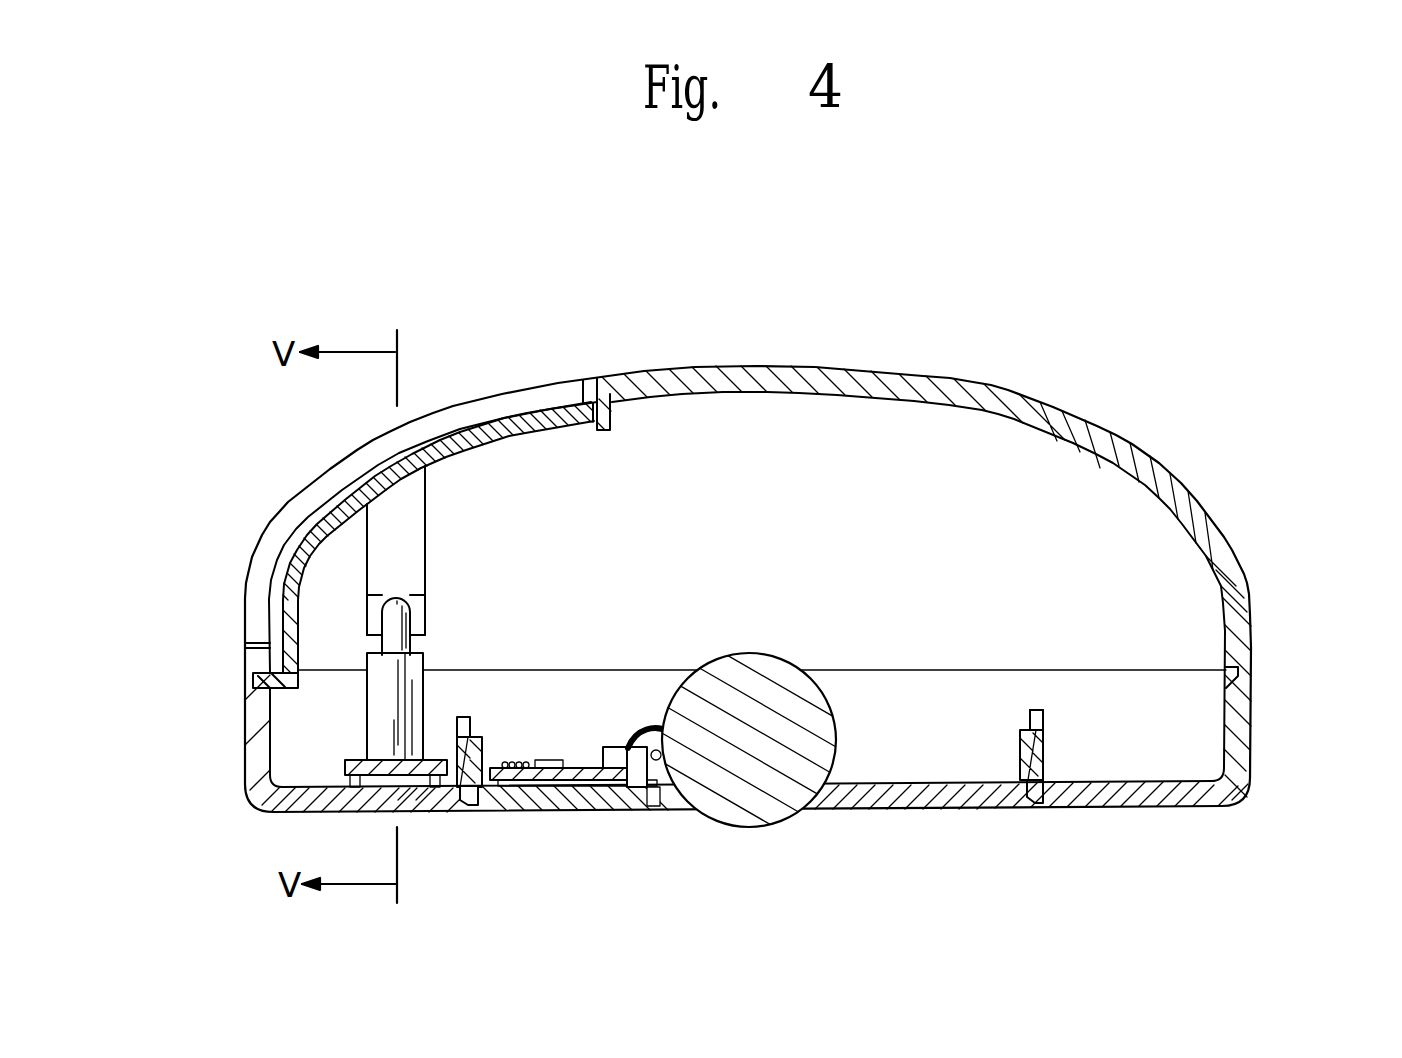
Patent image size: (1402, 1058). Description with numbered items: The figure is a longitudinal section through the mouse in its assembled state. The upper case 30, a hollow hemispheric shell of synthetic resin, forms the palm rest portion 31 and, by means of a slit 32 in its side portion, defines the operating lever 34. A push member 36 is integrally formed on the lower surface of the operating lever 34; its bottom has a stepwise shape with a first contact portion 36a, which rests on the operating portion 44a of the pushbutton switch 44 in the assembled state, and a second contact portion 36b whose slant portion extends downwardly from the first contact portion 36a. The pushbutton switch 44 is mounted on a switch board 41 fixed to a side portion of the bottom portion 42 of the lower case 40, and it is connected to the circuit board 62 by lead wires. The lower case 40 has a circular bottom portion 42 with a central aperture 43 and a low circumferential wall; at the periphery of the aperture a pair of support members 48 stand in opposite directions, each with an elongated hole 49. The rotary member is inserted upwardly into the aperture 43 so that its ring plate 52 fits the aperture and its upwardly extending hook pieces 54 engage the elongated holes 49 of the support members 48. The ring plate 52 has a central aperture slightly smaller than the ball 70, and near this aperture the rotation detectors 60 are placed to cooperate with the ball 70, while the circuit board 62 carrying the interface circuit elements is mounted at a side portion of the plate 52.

The upper case 30 is at (1135, 380).
The palm rest portion 31 is at (890, 382).
The slit 32 is at (243, 648).
The operating lever 34 is at (483, 392).
The push member 36 is at (415, 540).
The first contact portion 36a is at (425, 586).
The second contact portion 36b is at (425, 622).
The lower case 40 is at (1274, 721).
The switch board 41 is at (345, 765).
The bottom portion 42 is at (413, 800).
The aperture 43 is at (465, 800).
The pushbutton switch 44 is at (367, 710).
The operating portion 44a is at (373, 607).
The support member 48 is at (1033, 718).
The elongated hole 49 is at (1045, 740).
The ring plate 52 is at (537, 800).
The hook piece 54 is at (470, 745).
The rotation detector 60 is at (586, 746).
The circuit board 62 is at (613, 772).
The ball 70 is at (752, 682).